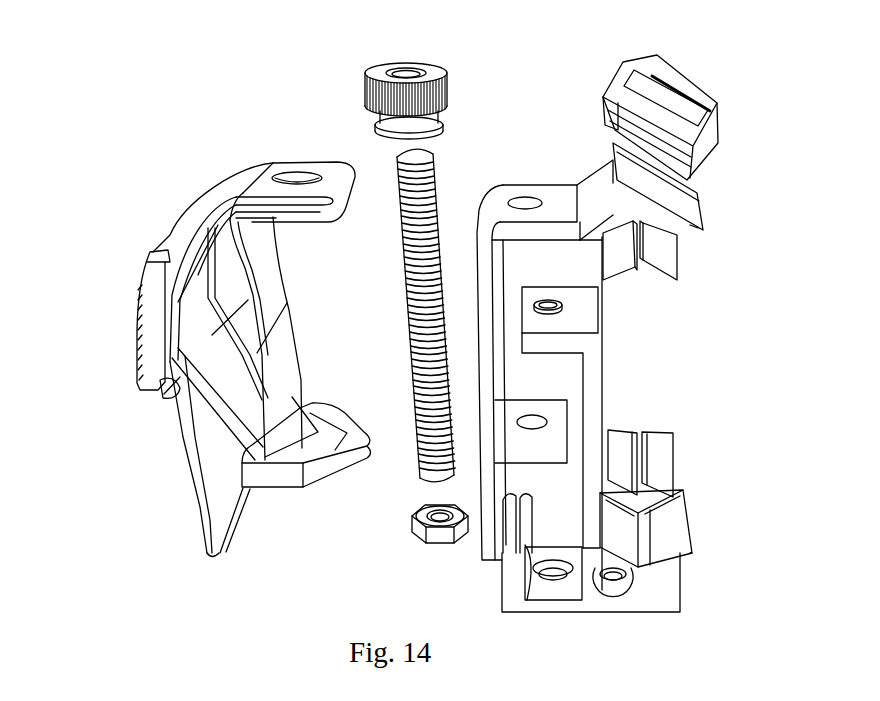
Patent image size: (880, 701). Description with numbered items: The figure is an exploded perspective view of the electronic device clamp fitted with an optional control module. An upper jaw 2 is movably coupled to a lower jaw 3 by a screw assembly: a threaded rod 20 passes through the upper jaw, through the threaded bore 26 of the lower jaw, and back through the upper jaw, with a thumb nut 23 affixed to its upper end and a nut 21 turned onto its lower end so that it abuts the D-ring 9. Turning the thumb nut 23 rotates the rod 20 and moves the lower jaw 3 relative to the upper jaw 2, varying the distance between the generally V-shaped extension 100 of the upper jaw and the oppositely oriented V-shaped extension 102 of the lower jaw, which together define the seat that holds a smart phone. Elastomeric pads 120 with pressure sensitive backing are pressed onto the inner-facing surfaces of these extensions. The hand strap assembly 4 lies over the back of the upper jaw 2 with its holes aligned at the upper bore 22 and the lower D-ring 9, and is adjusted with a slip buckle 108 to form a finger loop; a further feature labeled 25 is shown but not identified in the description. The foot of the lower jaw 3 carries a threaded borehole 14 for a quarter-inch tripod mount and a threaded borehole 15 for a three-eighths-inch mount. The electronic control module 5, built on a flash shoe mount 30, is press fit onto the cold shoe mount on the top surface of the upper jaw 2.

The upper jaw 2 is at (570, 170).
The lower jaw 3 is at (704, 509).
The hand strap assembly 4 is at (204, 172).
The electronic control module 5 is at (693, 64).
The D-ring 9 is at (228, 476).
The threaded borehole 14 is at (615, 579).
The threaded borehole 15 is at (552, 580).
The threaded rod 20 is at (393, 318).
The nut 21 is at (395, 521).
The bore 22 is at (302, 160).
The thumb nut 23 is at (463, 87).
The leg tip 25 is at (192, 538).
The threaded bore 26 is at (547, 285).
The shoe mount 30 is at (716, 208).
The V-shaped extension 100 is at (692, 226).
The V-shaped extension 102 is at (677, 555).
The slip buckle 108 is at (130, 293).
The pads 120 is at (631, 418).